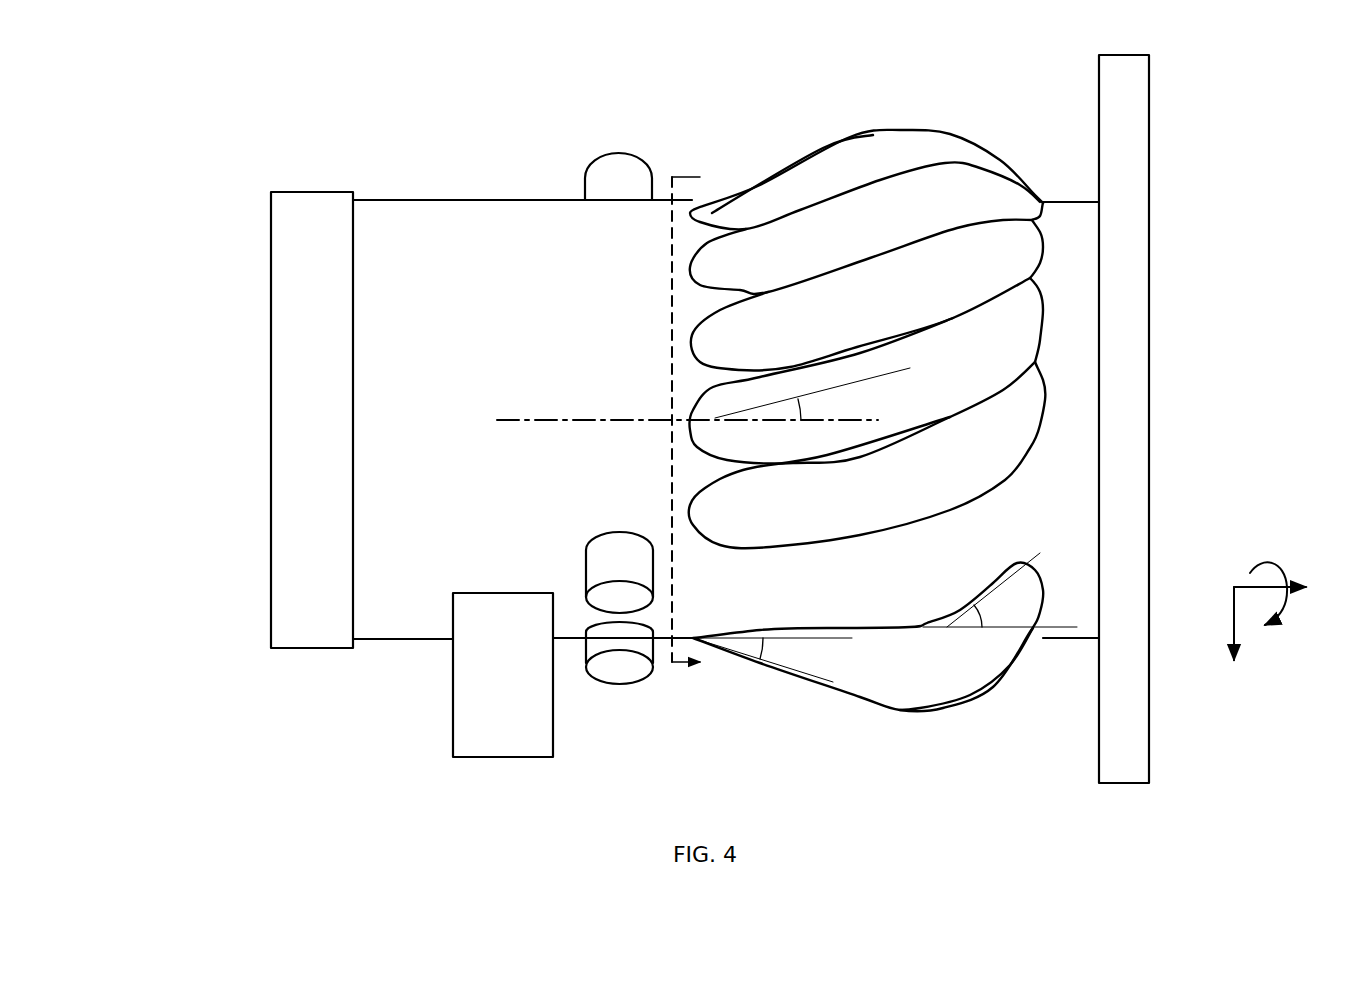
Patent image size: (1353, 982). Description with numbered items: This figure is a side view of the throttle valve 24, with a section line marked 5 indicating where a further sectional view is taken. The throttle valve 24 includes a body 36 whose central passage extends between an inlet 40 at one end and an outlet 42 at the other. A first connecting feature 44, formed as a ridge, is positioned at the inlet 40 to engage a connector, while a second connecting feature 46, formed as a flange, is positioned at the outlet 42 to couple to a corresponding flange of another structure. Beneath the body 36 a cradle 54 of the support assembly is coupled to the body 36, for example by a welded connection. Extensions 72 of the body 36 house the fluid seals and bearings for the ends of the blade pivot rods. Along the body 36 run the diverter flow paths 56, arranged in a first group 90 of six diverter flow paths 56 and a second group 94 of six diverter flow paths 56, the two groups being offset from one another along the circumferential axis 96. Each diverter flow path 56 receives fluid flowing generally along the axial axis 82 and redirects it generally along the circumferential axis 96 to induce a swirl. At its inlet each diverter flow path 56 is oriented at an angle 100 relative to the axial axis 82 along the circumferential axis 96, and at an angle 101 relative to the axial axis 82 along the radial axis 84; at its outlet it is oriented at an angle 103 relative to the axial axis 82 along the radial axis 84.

The section line 5- 5 is at (696, 422).
The throttle valve 24 is at (871, 291).
The body 36 is at (430, 205).
The inlet 40 is at (232, 381).
The outlet 42 is at (1168, 421).
The first connecting feature 44 is at (310, 198).
The second connecting feature 46 is at (1133, 106).
The cradle 54 is at (552, 727).
The diverter flow path 56 is at (934, 188).
The extension 72 is at (597, 181).
The axial axis 82 is at (1243, 587).
The radial axis 84 is at (1230, 610).
The first group 90 is at (871, 297).
The second group 94 is at (885, 682).
The circumferential axis 96 is at (1287, 600).
The angle 100 is at (803, 408).
The angle 101 is at (762, 648).
The angle 103 is at (1027, 630).